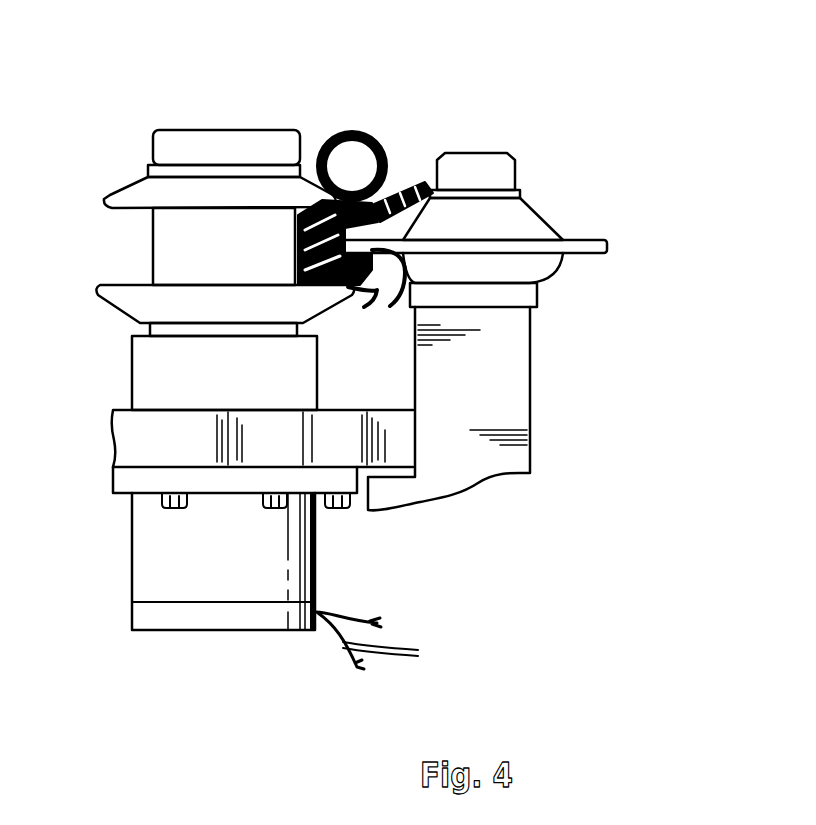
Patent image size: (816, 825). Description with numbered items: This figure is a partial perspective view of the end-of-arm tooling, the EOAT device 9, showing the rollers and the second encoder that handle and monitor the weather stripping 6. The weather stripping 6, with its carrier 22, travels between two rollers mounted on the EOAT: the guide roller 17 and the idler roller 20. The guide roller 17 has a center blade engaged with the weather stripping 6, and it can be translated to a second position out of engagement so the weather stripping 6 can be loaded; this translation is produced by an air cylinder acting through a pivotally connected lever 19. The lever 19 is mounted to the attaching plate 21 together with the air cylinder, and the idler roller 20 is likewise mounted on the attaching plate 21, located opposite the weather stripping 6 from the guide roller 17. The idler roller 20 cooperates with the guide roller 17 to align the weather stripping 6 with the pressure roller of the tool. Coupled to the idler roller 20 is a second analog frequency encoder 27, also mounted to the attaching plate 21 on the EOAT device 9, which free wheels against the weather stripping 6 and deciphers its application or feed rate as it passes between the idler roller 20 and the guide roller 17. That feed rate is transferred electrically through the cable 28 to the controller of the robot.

The weather stripping 6 is at (375, 140).
The EOAT device 9 is at (221, 431).
The guide roller 17 is at (538, 213).
The lever 19 is at (493, 383).
The idler roller 20 is at (127, 188).
The attaching plate 21 is at (112, 447).
The carrier 22 is at (378, 302).
The second analog frequency encoder 27 is at (128, 570).
The cable 28 is at (389, 642).